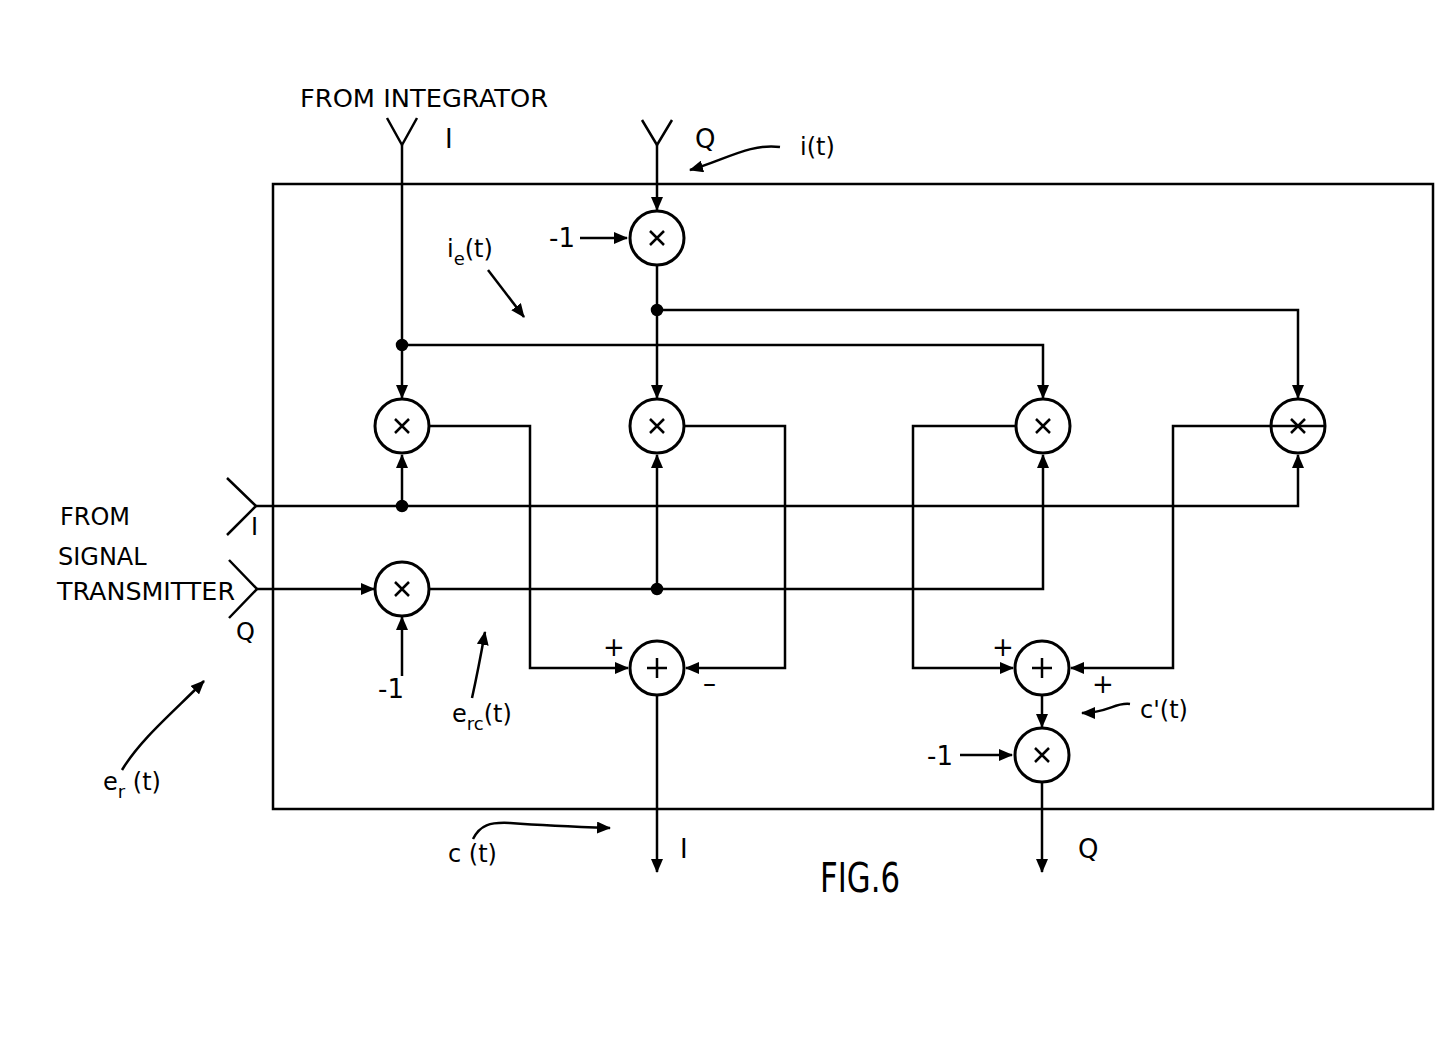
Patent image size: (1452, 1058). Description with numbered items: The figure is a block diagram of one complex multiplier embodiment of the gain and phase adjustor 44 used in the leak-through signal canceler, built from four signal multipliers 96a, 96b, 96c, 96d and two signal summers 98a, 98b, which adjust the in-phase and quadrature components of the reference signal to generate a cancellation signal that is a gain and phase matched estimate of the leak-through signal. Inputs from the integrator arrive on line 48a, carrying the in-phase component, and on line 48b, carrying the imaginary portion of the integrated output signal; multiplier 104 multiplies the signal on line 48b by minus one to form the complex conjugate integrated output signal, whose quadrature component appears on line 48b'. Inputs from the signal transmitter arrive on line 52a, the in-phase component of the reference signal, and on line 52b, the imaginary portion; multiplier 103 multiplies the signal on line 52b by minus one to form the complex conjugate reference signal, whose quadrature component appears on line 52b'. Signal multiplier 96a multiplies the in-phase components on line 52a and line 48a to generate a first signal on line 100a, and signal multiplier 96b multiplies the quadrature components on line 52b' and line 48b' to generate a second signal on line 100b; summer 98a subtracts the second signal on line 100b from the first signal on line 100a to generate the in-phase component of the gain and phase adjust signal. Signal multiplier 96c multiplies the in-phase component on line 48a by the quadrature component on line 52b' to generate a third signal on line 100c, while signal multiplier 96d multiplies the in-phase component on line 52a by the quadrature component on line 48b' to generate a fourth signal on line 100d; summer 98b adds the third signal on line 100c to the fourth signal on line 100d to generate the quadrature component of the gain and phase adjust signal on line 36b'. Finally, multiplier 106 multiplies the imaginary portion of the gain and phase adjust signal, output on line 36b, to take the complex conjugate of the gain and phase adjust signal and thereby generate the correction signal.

The gain and phase adjustor 44 is at (965, 184).
The line 48a is at (402, 168).
The line 48b is at (617, 165).
The line 48b' is at (923, 331).
The line 52a is at (262, 504).
The line 52b is at (301, 615).
The line 52b' is at (736, 524).
The signal multiplier 96a is at (425, 411).
The signal multiplier 96b is at (680, 411).
The signal multiplier 96c is at (1066, 411).
The signal multiplier 96d is at (1320, 409).
The summer 98a is at (683, 652).
The summer 98b is at (1063, 647).
The line 100a is at (530, 638).
The line 100b is at (785, 652).
The line 100c is at (913, 650).
The line 100d is at (1173, 640).
The multiplier 103 is at (406, 562).
The multiplier 104 is at (684, 238).
The multiplier 106 is at (1070, 748).
The line 36b' is at (982, 706).
The line 36b is at (992, 827).